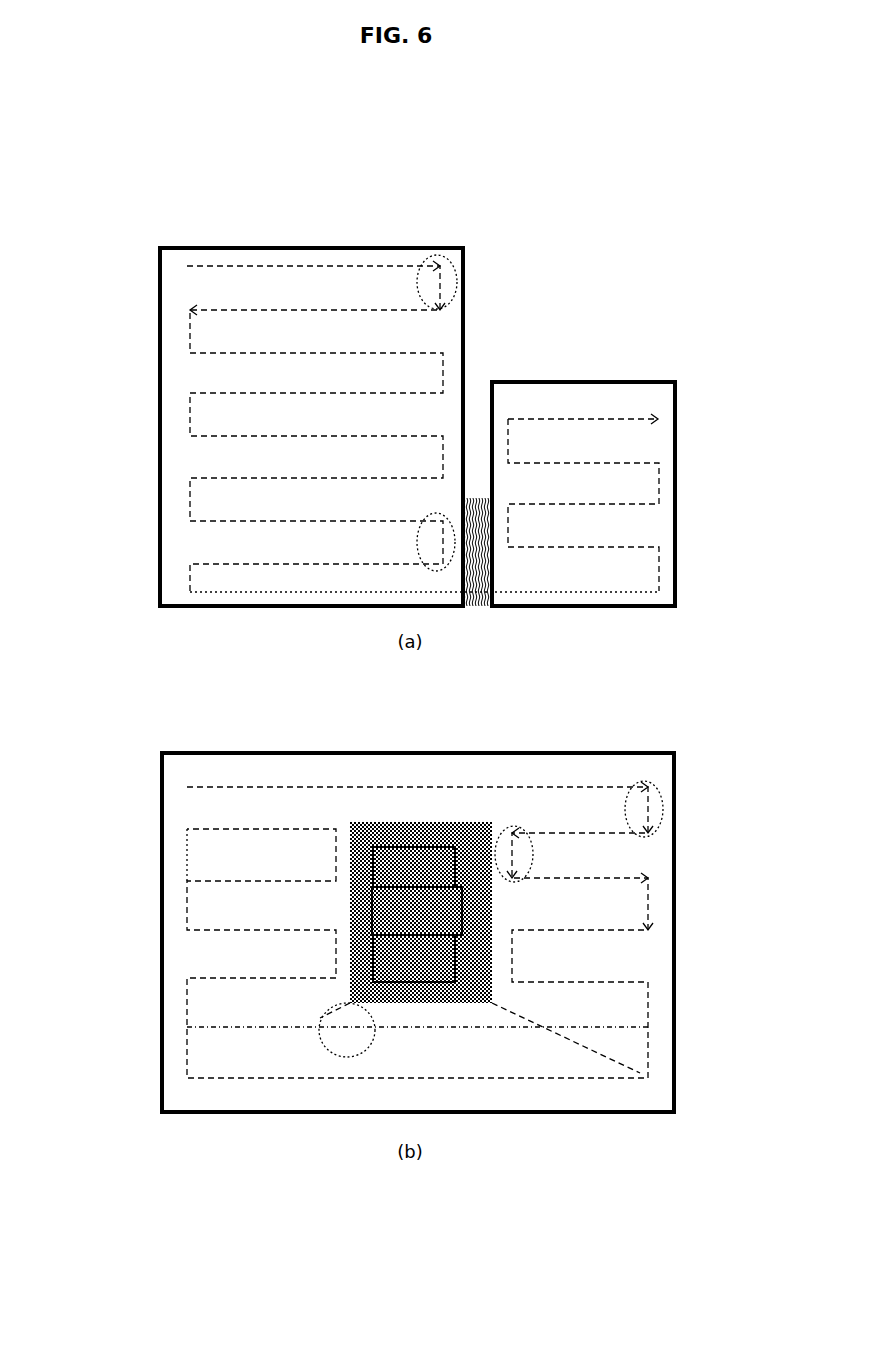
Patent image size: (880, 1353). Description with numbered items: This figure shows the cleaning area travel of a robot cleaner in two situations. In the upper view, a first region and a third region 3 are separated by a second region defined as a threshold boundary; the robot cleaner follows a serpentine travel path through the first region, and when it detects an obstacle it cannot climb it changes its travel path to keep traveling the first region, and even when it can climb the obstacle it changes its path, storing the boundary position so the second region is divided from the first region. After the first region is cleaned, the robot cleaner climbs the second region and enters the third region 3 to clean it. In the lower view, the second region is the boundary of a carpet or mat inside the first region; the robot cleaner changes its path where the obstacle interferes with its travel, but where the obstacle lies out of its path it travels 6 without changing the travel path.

The third region 3 is at (653, 443).
The travel without path change 6 is at (320, 1032).